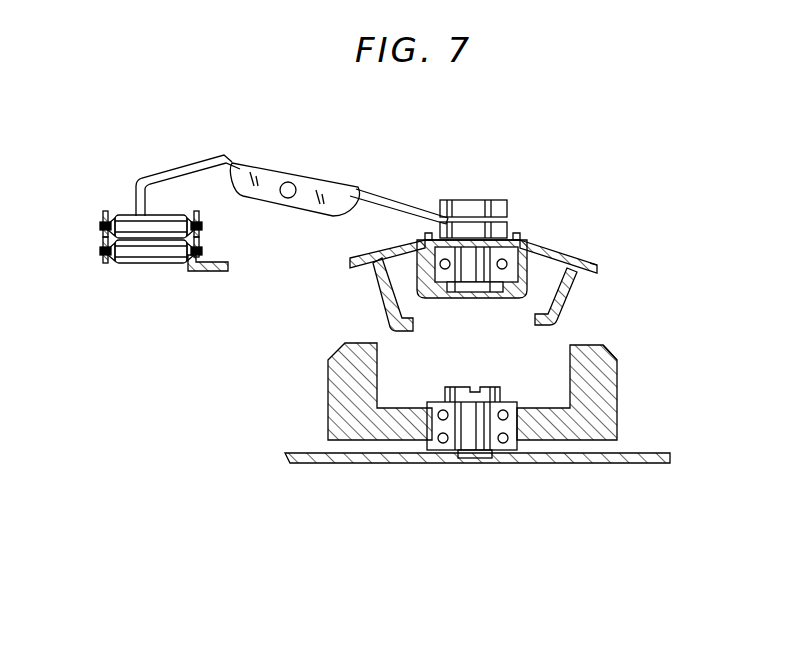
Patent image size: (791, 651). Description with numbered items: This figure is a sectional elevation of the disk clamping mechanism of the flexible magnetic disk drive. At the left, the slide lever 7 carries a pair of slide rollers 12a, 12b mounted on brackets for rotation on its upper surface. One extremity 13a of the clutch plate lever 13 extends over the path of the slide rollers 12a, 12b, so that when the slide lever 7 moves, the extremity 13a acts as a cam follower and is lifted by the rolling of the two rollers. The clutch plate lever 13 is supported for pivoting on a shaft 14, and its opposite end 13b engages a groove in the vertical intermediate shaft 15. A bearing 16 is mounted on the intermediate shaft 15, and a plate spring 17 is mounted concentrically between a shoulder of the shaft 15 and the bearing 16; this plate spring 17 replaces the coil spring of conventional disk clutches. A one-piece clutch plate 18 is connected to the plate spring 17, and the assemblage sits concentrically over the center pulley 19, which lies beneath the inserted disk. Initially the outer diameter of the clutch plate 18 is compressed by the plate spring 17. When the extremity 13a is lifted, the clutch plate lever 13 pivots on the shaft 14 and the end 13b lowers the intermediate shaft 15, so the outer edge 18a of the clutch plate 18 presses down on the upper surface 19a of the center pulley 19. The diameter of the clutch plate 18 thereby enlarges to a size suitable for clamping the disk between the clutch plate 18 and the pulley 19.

The slide lever 7 is at (213, 275).
The slide roller 12a is at (140, 253).
The slide roller 12b is at (130, 216).
The clutch plate lever 13 is at (218, 157).
The extremity of clutch plate lever 13a is at (132, 213).
The opposite end of clutch plate lever 13b is at (490, 219).
The shaft 14 is at (292, 183).
The vertical intermediate shaft 15 is at (507, 203).
The bearing 16 is at (537, 250).
The plate spring 17 is at (582, 258).
The clutch plate 18 is at (598, 273).
The outer edge of clutch plate 18a is at (593, 278).
The center pulley 19 is at (606, 381).
The upper surface of center pulley 19a is at (572, 343).